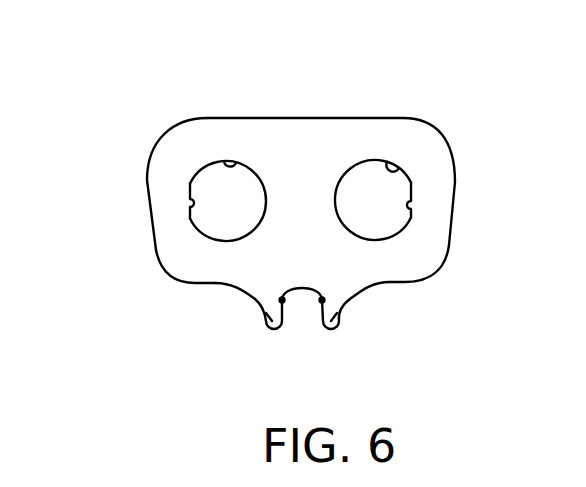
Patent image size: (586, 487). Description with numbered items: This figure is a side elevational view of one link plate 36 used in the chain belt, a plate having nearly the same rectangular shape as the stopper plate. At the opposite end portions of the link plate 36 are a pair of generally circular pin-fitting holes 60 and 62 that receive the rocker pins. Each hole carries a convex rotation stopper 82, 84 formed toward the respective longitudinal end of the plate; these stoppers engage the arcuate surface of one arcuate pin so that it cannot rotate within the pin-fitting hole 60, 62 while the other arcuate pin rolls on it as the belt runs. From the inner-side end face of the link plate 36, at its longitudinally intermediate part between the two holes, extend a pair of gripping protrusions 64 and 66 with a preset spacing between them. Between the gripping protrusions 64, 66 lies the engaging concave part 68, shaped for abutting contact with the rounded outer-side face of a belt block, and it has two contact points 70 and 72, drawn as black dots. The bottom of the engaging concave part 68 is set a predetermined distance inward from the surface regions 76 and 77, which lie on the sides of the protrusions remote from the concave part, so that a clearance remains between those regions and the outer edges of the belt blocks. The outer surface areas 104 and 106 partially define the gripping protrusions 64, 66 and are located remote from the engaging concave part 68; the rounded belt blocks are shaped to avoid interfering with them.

The link plate 36 is at (157, 80).
The pin-fitting hole 60 is at (229, 163).
The pin-fitting hole 62 is at (394, 164).
The gripping protrusion 64 is at (264, 329).
The gripping protrusion 66 is at (342, 325).
The engaging concave part 68 is at (301, 289).
The contact point 70 is at (281, 299).
The contact point 72 is at (323, 299).
The surface region 76 is at (208, 283).
The surface region 77 is at (392, 284).
The rotation stopper 82 is at (192, 203).
The rotation stopper 84 is at (412, 213).
The outer surface area 104 is at (256, 301).
The outer surface area 106 is at (352, 300).